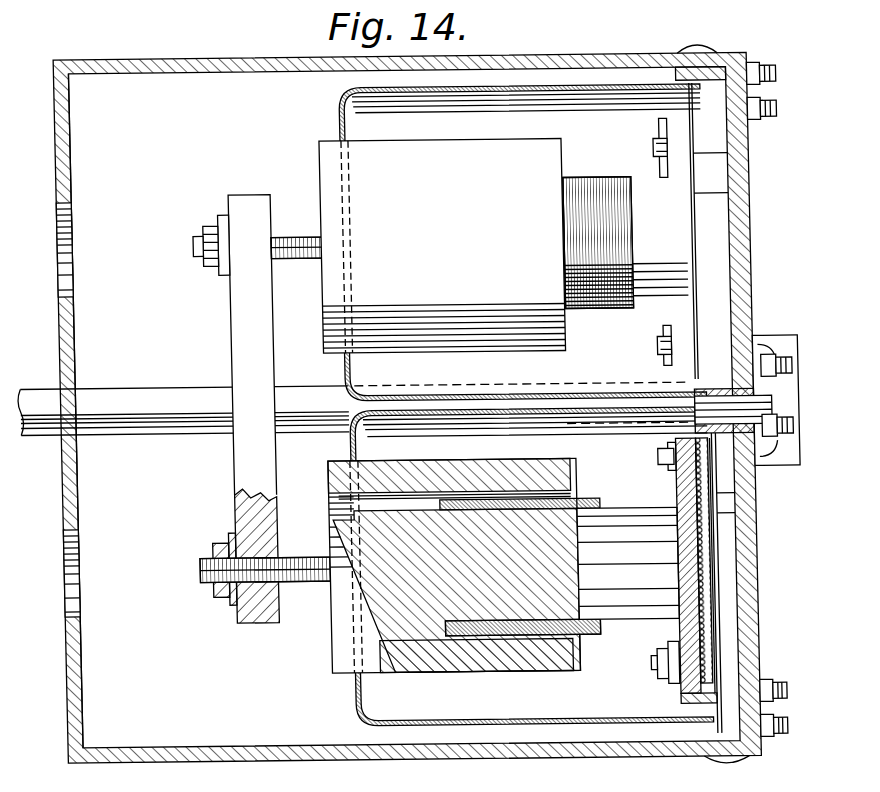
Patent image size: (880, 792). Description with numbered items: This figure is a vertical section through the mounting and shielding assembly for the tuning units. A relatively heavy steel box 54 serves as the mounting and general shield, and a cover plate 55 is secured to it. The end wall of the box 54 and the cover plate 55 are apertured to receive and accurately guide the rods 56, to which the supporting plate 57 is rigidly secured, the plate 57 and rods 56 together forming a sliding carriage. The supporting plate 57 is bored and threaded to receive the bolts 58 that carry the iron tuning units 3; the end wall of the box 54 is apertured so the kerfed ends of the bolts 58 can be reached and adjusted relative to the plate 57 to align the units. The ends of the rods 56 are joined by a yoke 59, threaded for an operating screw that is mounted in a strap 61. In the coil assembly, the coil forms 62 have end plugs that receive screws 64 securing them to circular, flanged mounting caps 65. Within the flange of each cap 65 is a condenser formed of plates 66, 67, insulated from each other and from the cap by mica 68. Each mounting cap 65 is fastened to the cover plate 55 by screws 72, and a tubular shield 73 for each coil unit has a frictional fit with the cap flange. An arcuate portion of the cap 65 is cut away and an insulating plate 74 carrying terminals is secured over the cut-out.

The iron tuning unit 3 is at (326, 338).
The steel box 54 is at (69, 484).
The cover plate 55 is at (738, 541).
The rod 56 is at (172, 390).
The supporting plate 57 is at (226, 477).
The bolt 58 is at (304, 261).
The yoke 59 is at (69, 297).
The strap 61 is at (768, 343).
The coil form 62 is at (632, 314).
The screw 64 is at (660, 582).
The mounting cap 65 is at (716, 244).
The condenser plate 66 is at (704, 636).
The condenser plate 67 is at (690, 580).
The mica 68 is at (702, 612).
The screw 72 is at (758, 127).
The tubular shield 73 is at (622, 99).
The insulating plate 74 is at (654, 150).